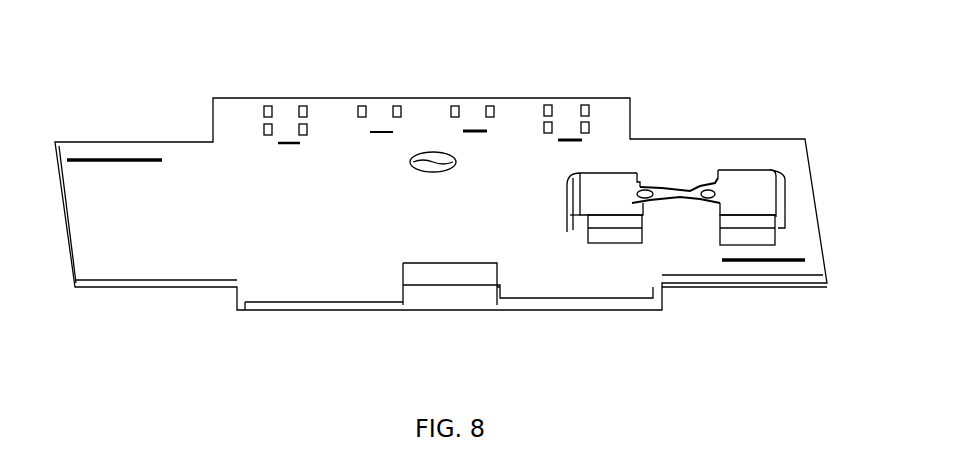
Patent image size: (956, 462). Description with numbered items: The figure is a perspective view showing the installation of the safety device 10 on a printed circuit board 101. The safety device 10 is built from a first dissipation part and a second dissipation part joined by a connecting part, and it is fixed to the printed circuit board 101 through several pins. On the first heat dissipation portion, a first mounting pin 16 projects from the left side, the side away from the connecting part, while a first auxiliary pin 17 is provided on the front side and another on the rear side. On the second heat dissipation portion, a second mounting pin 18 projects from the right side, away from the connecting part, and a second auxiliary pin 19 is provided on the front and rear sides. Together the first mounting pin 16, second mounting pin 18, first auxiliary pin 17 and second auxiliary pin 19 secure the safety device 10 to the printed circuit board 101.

The printed circuit board 101 is at (248, 207).
The safety device 10 is at (745, 190).
The first mounting pin 16 is at (565, 213).
The first auxiliary pin 17 is at (618, 237).
The second mounting pin 18 is at (785, 225).
The second auxiliary pin 19 is at (748, 237).